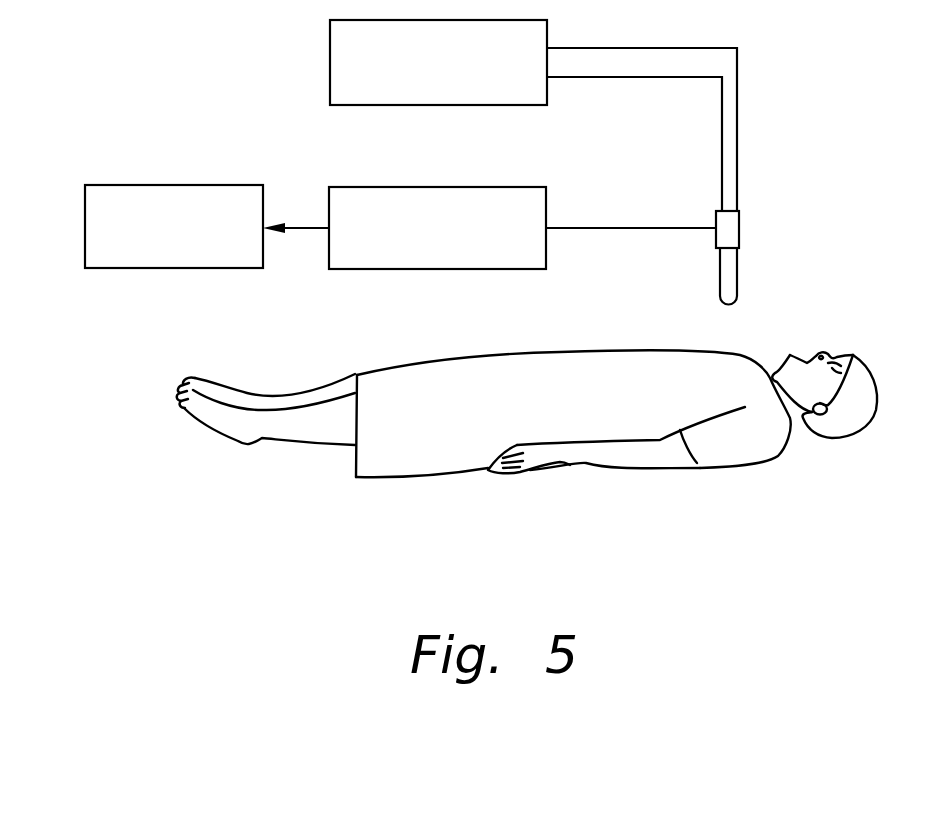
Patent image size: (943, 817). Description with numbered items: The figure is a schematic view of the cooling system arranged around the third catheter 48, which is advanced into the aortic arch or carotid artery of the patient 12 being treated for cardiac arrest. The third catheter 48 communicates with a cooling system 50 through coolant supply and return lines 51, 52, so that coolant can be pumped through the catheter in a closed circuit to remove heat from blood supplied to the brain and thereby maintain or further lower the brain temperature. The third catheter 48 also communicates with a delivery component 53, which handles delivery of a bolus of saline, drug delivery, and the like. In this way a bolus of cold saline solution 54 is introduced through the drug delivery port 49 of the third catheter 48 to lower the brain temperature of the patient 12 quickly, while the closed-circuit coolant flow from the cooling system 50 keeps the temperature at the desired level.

The patient 12 is at (755, 448).
The third catheter 48 is at (741, 222).
The drug delivery port 49 is at (738, 280).
The cooling system 50 is at (330, 52).
The coolant supply line 51 is at (612, 48).
The coolant return line 52 is at (612, 78).
The delivery component 53 is at (468, 187).
The bolus of cold saline solution 54 is at (85, 226).